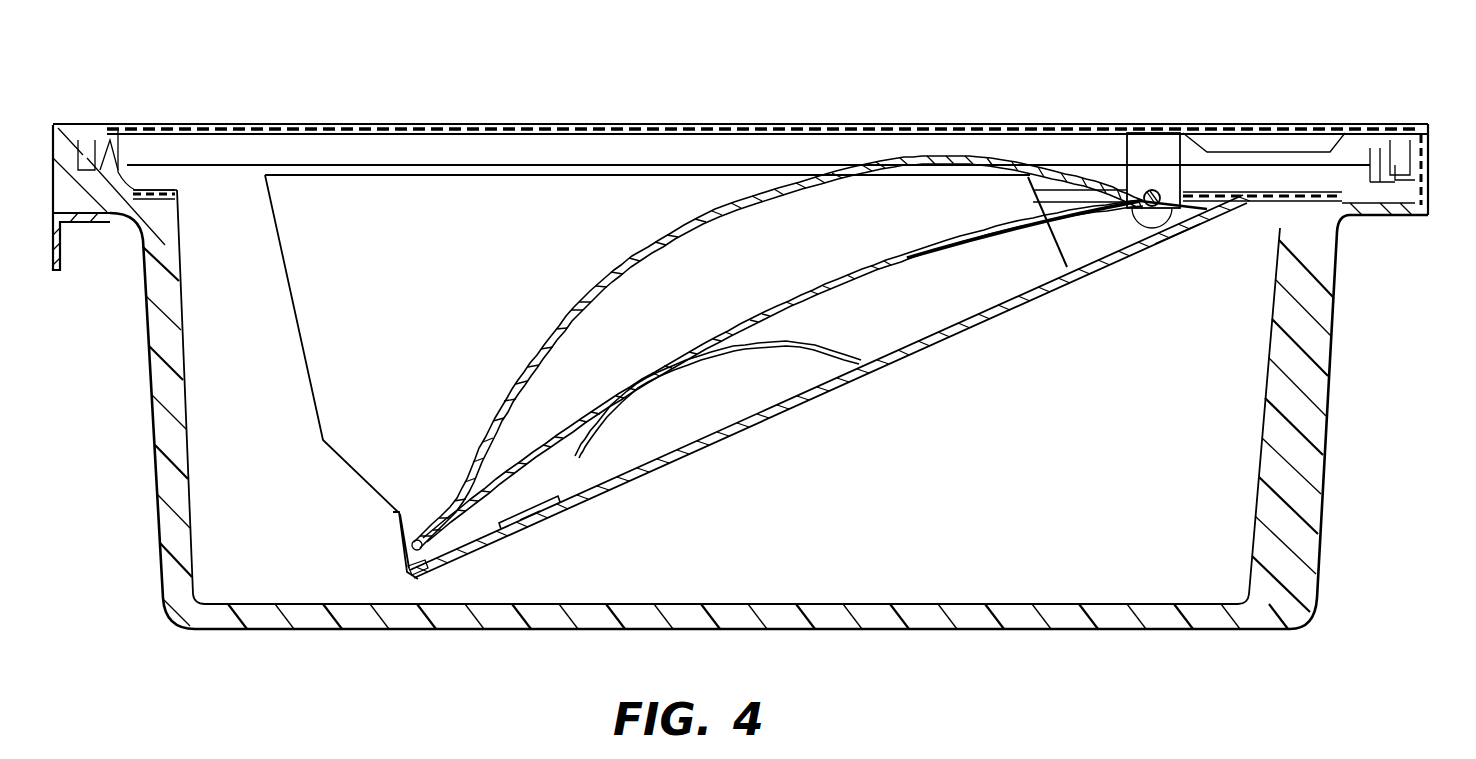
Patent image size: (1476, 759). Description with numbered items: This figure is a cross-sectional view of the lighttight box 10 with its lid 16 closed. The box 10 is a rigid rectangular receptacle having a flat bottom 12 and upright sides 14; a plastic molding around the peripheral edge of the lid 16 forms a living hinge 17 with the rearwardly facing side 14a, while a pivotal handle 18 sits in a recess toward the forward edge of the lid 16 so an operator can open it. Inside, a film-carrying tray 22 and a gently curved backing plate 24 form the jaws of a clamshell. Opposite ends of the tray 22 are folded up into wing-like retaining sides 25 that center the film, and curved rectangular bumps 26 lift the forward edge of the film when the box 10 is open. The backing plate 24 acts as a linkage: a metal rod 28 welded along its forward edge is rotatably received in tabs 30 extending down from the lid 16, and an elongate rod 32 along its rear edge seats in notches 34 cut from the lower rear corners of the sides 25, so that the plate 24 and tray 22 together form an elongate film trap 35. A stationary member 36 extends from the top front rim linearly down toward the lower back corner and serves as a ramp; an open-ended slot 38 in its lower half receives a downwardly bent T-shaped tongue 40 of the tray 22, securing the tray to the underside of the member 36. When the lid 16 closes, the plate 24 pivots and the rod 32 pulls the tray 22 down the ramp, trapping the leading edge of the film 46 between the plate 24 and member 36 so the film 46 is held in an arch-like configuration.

The box 10 is at (1347, 321).
The flat bottom 12 is at (1010, 631).
The upright sides 14 is at (1325, 520).
The rearwardly facing side 14a is at (155, 525).
The lid 16 is at (828, 124).
The living hinge 17 is at (53, 165).
The pivotal handle 18 is at (1395, 127).
The film-carrying tray 22 is at (965, 345).
The backing plate 24 is at (600, 292).
The retaining sides 25 is at (427, 272).
The curved rectangular bumps 26 is at (810, 352).
The metal rod 28 is at (1155, 190).
The tabs 30 is at (1130, 152).
The elongate rod 32 is at (405, 560).
The notches 34 is at (418, 540).
The film trap 35 is at (427, 568).
The stationary member 36 is at (1147, 245).
The open-ended slot 38 is at (965, 345).
The T-shaped central section 40 is at (543, 531).
The film 46 is at (826, 290).